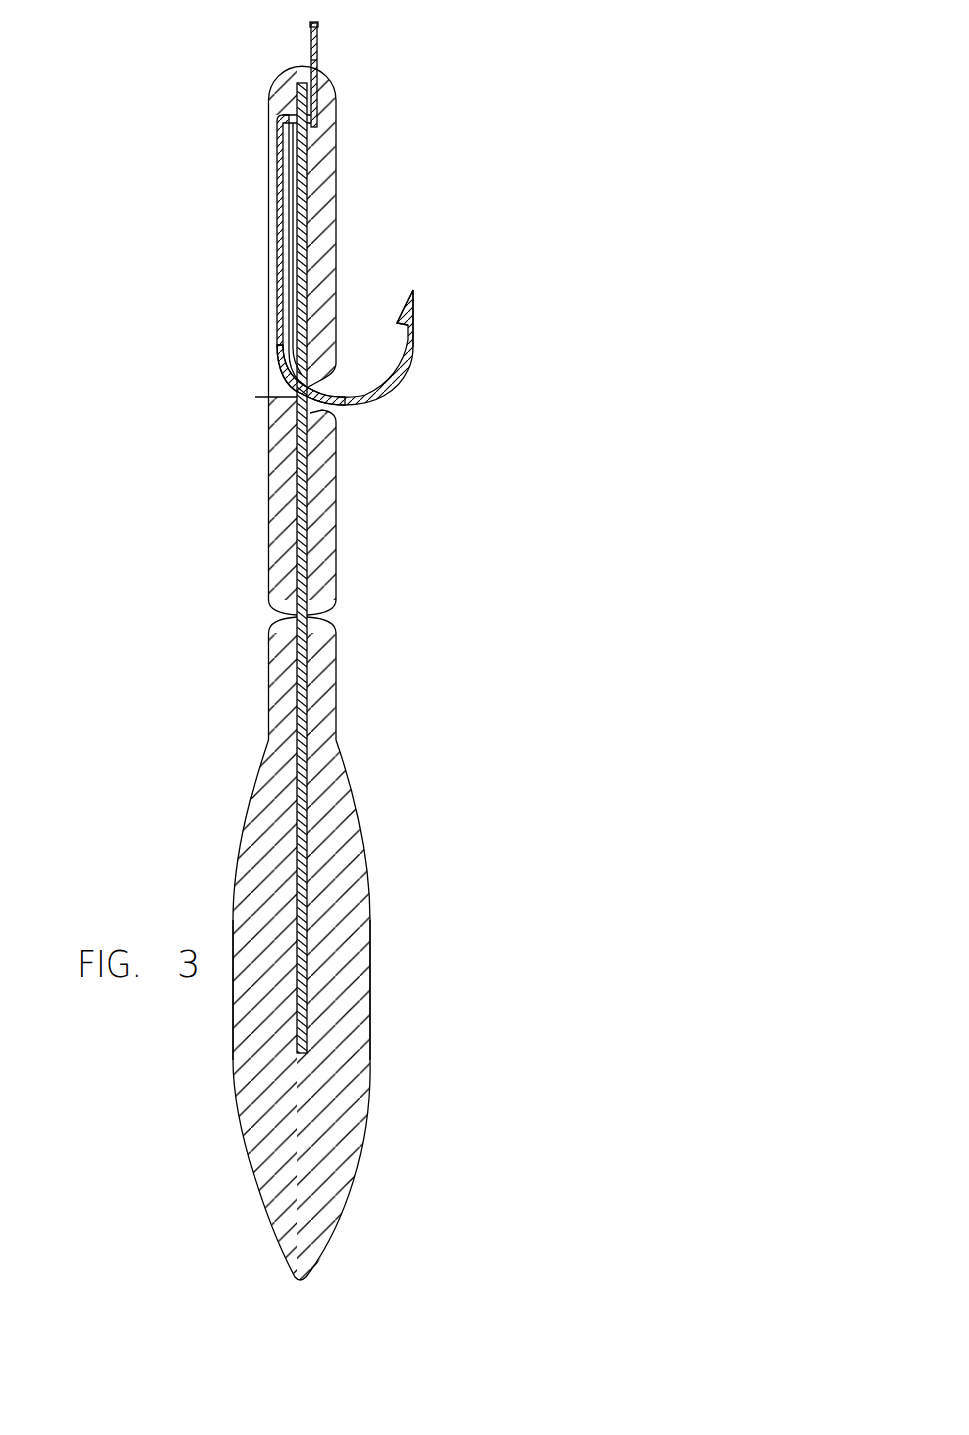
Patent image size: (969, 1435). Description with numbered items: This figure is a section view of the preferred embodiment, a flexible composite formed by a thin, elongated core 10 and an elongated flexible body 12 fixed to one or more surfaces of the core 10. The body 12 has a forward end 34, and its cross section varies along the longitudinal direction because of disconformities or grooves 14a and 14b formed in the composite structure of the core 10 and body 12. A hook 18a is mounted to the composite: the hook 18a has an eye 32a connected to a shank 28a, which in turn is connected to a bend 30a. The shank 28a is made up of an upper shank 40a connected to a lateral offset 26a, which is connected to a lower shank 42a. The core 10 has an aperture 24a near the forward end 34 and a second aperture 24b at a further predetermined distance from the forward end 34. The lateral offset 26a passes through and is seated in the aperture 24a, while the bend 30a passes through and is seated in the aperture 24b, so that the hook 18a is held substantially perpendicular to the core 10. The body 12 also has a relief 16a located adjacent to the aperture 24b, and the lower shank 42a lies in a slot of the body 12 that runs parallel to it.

The core 10 is at (307, 1053).
The body 12 is at (370, 913).
The groove 14a is at (297, 615).
The groove 14b is at (307, 615).
The relief 16a is at (325, 388).
The hook 18a is at (428, 345).
The aperture 24a is at (293, 138).
The aperture 24b is at (255, 397).
The lateral offset 26a is at (297, 122).
The shank 28a is at (338, 64).
The bend 30a is at (395, 390).
The eye 32a is at (311, 23).
The forward end 34 is at (336, 165).
The upper shank 40a is at (317, 40).
The lower shank 42a is at (279, 248).